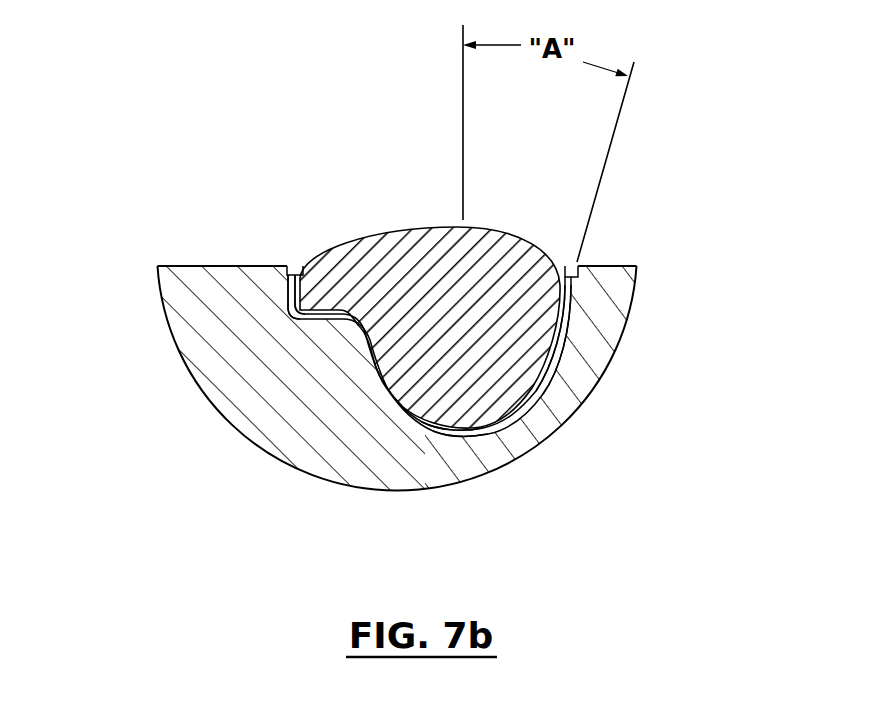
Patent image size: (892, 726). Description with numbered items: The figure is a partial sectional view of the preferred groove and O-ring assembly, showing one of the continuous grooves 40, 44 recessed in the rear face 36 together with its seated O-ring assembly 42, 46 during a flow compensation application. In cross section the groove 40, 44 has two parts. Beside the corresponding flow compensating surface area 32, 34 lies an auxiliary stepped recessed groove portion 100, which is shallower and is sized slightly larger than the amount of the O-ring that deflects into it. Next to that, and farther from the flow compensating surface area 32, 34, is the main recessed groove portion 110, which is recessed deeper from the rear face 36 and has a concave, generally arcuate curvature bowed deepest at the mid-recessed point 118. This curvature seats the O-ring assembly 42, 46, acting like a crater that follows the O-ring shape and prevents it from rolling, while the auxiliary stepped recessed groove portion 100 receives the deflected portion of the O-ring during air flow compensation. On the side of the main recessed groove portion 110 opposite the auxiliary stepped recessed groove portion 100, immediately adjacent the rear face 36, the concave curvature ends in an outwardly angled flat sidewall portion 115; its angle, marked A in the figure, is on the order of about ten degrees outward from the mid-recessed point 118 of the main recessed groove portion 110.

The rear face 36 is at (200, 266).
The flow compensating surface area 32 is at (397, 208).
The flow compensating surface area 34 is at (260, 266).
The auxiliary stepped recessed groove portion 100 is at (287, 293).
The O-ring assembly 42 is at (502, 237).
The O-ring assembly 46 is at (548, 243).
The outwardly angled flat sidewall portion 115 is at (572, 290).
The groove 40 is at (467, 378).
The groove 44 is at (560, 336).
The main recessed groove portion 110 is at (540, 393).
The mid-recessed point 118 is at (458, 432).